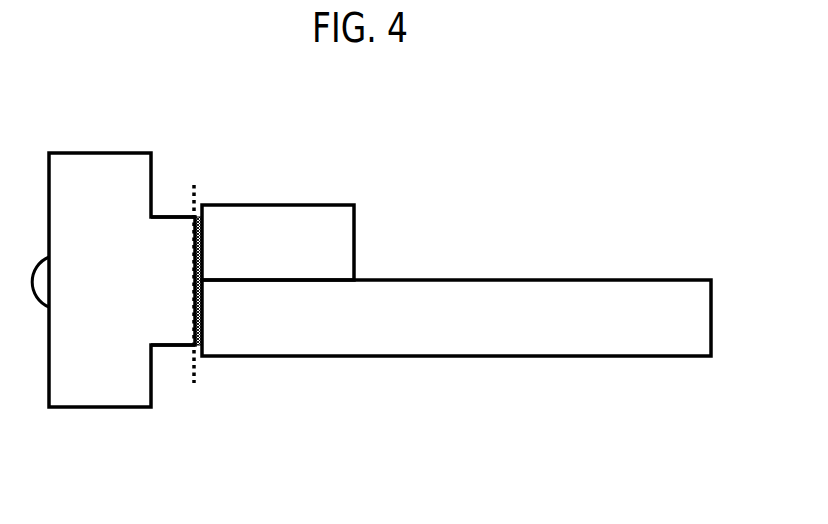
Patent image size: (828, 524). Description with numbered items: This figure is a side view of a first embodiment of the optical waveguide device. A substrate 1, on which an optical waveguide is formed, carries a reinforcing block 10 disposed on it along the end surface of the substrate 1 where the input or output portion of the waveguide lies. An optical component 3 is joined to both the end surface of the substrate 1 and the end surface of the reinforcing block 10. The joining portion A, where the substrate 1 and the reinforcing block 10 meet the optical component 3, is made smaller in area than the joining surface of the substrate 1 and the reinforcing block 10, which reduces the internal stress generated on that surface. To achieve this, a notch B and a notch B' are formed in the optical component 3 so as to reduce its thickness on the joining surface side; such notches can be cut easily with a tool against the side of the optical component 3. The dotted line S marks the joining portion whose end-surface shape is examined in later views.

The substrate 1 is at (608, 304).
The reinforcing block 10 is at (277, 230).
The optical component 3 is at (110, 382).
The dotted line S is at (204, 271).
The joining portion A is at (201, 317).
The notch B is at (182, 155).
The notch B' is at (180, 413).